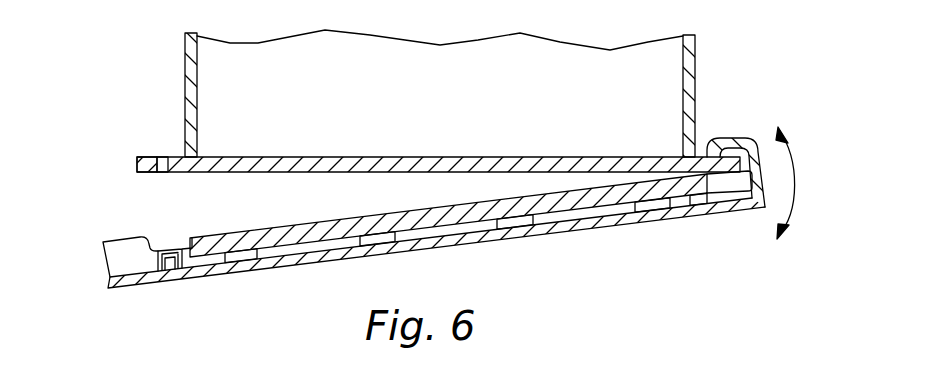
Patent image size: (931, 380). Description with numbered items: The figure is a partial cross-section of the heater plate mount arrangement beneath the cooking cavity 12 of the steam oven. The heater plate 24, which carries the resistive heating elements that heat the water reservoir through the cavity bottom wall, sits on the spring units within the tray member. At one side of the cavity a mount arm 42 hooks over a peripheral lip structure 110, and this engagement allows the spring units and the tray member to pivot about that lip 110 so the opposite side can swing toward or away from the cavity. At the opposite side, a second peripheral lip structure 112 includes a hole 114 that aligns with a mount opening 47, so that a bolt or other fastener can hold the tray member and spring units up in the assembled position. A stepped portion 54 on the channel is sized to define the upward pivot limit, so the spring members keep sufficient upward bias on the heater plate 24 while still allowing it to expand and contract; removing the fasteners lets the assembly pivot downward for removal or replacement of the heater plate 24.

The cooking cavity 12 is at (453, 103).
The heater plate 24 is at (320, 222).
The mount arm 42 is at (736, 137).
The mount opening 47 is at (173, 270).
The stepped portion 54 is at (116, 240).
The peripheral lip structure 110 is at (706, 155).
The peripheral lip structure 112 is at (143, 157).
The hole 114 is at (162, 157).